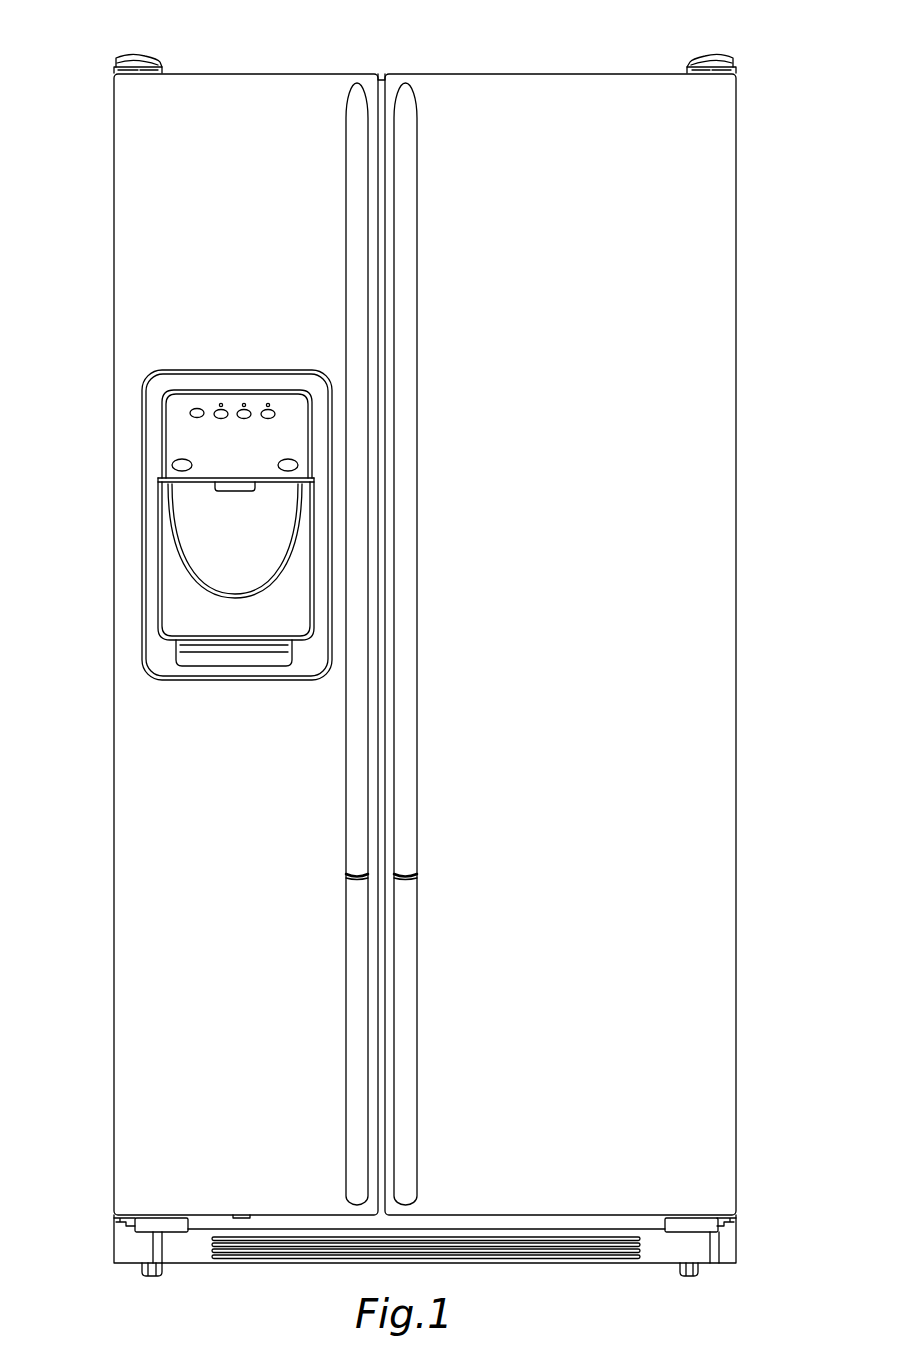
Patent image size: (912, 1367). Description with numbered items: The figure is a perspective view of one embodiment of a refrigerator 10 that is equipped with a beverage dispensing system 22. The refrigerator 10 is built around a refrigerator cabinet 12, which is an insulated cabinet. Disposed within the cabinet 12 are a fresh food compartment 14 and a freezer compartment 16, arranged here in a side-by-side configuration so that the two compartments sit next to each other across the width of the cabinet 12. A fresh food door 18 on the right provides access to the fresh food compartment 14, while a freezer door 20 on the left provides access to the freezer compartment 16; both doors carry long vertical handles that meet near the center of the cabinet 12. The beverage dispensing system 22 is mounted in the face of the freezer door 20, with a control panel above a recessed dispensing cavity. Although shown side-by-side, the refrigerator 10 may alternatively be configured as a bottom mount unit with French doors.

The refrigerator 10 is at (656, 46).
The refrigerator cabinet 12 is at (247, 72).
The fresh food compartment 14 is at (670, 590).
The freezer compartment 16 is at (178, 212).
The fresh food door 18 is at (705, 334).
The freezer door 20 is at (178, 788).
The beverage dispensing system 22 is at (212, 367).